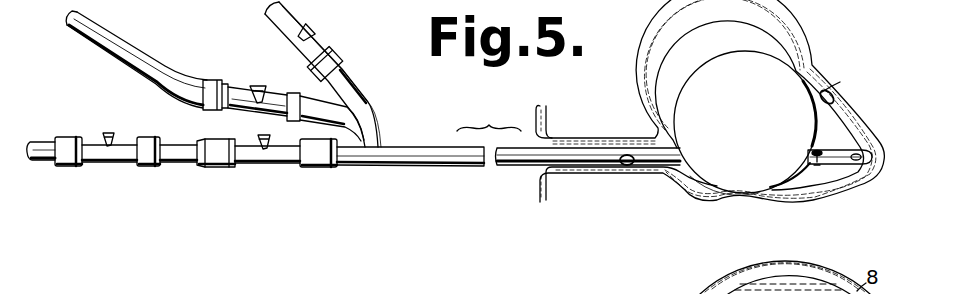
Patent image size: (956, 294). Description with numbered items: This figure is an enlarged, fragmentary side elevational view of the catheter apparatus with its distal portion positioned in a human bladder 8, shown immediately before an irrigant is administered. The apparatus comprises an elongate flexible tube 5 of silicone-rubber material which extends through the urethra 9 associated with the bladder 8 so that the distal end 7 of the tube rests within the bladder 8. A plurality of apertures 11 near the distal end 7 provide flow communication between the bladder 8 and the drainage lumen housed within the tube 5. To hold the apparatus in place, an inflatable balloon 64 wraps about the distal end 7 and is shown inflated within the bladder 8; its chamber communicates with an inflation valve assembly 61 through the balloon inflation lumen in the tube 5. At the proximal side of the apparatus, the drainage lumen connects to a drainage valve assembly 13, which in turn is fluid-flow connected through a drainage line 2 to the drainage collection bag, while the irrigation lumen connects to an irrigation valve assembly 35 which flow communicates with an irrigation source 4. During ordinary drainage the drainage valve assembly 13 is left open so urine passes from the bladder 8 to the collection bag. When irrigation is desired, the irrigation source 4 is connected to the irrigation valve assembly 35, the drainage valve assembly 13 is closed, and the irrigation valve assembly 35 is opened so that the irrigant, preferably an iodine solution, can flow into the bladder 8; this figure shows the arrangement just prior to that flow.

The drainage line 2 is at (43, 163).
The irrigation source 4 is at (133, 48).
The elongate flexible tube 5 is at (406, 166).
The distal end 7 is at (868, 148).
The bladder 8 is at (832, 90).
The urethra 9 is at (620, 167).
The apertures 11 is at (818, 164).
The drainage valve assembly 13 is at (270, 166).
The irrigation valve assembly 35 is at (237, 85).
The inflation valve assembly 61 is at (276, 27).
The inflatable balloon 64 is at (713, 197).